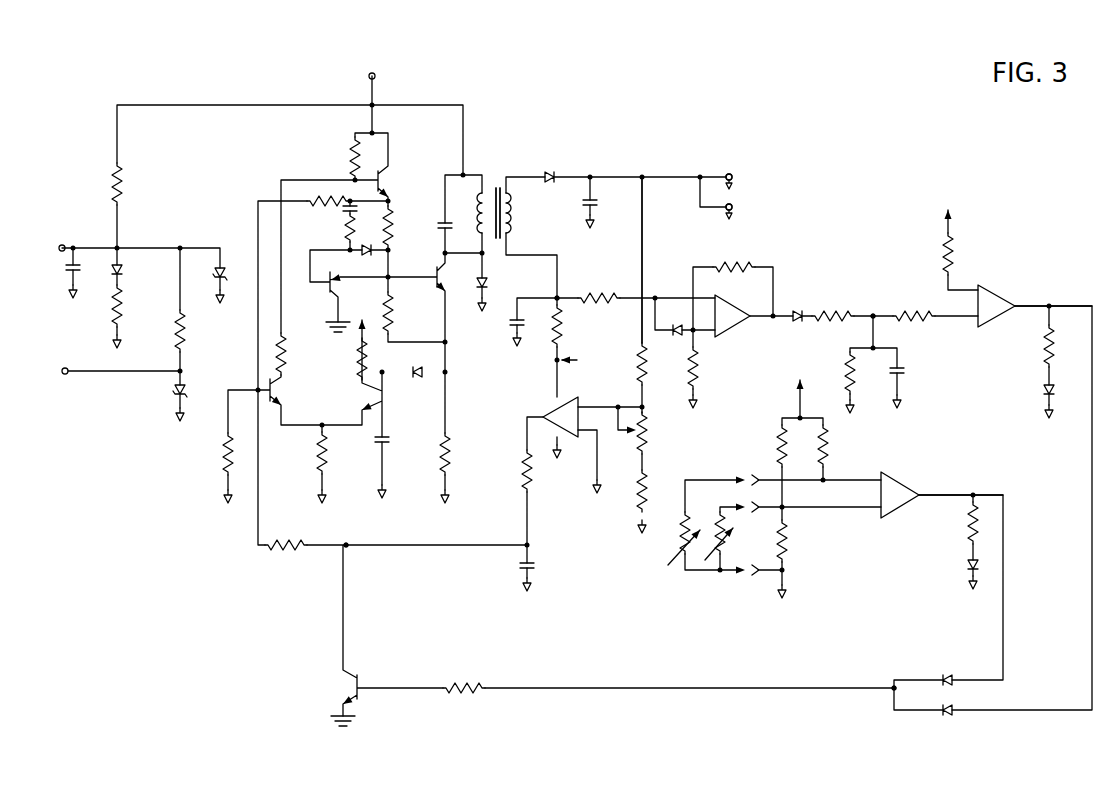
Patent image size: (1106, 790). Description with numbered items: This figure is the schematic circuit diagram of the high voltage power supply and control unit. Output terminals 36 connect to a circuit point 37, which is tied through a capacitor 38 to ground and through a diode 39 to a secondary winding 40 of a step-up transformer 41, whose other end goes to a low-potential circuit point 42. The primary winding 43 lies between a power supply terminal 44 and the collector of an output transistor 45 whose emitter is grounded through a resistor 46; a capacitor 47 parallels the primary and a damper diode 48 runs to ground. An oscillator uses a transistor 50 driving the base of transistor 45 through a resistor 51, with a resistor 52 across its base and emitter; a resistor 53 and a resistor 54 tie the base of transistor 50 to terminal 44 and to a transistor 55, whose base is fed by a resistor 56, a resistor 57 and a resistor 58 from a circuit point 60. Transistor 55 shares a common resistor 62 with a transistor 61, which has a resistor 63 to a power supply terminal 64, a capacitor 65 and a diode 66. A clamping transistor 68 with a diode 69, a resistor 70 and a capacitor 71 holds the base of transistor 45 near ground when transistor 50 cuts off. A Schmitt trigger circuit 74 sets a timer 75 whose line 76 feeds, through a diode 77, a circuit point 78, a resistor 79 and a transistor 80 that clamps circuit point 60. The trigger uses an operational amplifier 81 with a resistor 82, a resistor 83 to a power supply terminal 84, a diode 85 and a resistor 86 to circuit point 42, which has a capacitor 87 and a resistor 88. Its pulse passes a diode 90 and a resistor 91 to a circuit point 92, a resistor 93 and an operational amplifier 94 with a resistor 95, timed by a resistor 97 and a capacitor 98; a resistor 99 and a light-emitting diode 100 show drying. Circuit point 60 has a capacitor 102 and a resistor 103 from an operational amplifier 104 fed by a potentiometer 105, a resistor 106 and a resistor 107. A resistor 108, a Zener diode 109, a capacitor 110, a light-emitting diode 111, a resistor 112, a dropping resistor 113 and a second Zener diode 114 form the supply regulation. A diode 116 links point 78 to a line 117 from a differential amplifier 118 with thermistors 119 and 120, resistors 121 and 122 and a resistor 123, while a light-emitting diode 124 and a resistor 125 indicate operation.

The output terminals 36 is at (732, 204).
The circuit point 37 is at (642, 177).
The capacitor 38 is at (592, 208).
The diode 39 is at (552, 173).
The secondary winding 40 is at (509, 214).
The transformer 41 is at (497, 184).
The circuit point 42 is at (558, 297).
The primary winding 43 is at (477, 210).
The power supply terminal 44 is at (376, 76).
The transistor 45 is at (436, 288).
The resistor 46 is at (449, 456).
The capacitor 47 is at (444, 228).
The damper diode 48 is at (487, 284).
The transistor 50 is at (388, 179).
The resistor 51 is at (390, 225).
The resistor 52 is at (389, 321).
The resistor 53 is at (351, 156).
The resistor 54 is at (283, 348).
The transistor 55 is at (274, 384).
The resistor 56 is at (310, 197).
The resistor 57 is at (224, 455).
The resistor 58 is at (282, 542).
The circuit point 60 is at (348, 548).
The transistor 61 is at (384, 398).
The common resistor 62 is at (318, 450).
The resistor 63 is at (360, 360).
The power supply terminal 64 is at (588, 360).
The capacitor 65 is at (379, 444).
The diode 66 is at (416, 368).
The clamping transistor 68 is at (330, 290).
The diode 69 is at (362, 253).
The resistor 70 is at (345, 230).
The capacitor 71 is at (348, 204).
The Schmitt trigger circuit 74 is at (795, 271).
The timer 75 is at (924, 272).
The line 76 is at (1030, 304).
The diode 77 is at (960, 714).
The circuit point 78 is at (892, 683).
The resistor 79 is at (470, 686).
The transistor 80 is at (360, 678).
The operational amplifier 81 is at (734, 332).
The resistor 82 is at (734, 266).
The resistor 83 is at (695, 368).
The power supply terminal 84 is at (948, 190).
The diode 85 is at (678, 336).
The resistor 86 is at (607, 300).
The capacitor 87 is at (514, 326).
The resistor 88 is at (555, 330).
The diode 90 is at (802, 314).
The resistor 91 is at (832, 322).
The circuit point 92 is at (873, 314).
The resistor 93 is at (918, 319).
The operational amplifier 94 is at (990, 325).
The resistor 95 is at (950, 250).
The resistor 97 is at (850, 380).
The capacitor 98 is at (902, 376).
The resistor 99 is at (1045, 350).
The light-emitting diode 100 is at (1045, 391).
The capacitor 102 is at (534, 564).
The resistor 103 is at (529, 470).
The operational amplifier 104 is at (556, 404).
The potentiometer 105 is at (644, 440).
The resistor 106 is at (640, 366).
The resistor 107 is at (643, 491).
The resistor 108 is at (119, 203).
The Zener diode 109 is at (226, 266).
The capacitor 110 is at (66, 271).
The light-emitting diode 111 is at (120, 270).
The resistor 112 is at (118, 310).
The dropping resistor 113 is at (182, 328).
The second Zener diode 114 is at (173, 394).
The diode 116 is at (950, 676).
The line 117 is at (954, 494).
The differential amplifier 118 is at (903, 513).
The thermistor 119 is at (674, 566).
The thermistor 120 is at (721, 545).
The resistor 121 is at (776, 448).
The resistor 122 is at (828, 453).
The resistor 123 is at (784, 542).
The light-emitting diode 124 is at (970, 566).
The resistor 125 is at (970, 530).